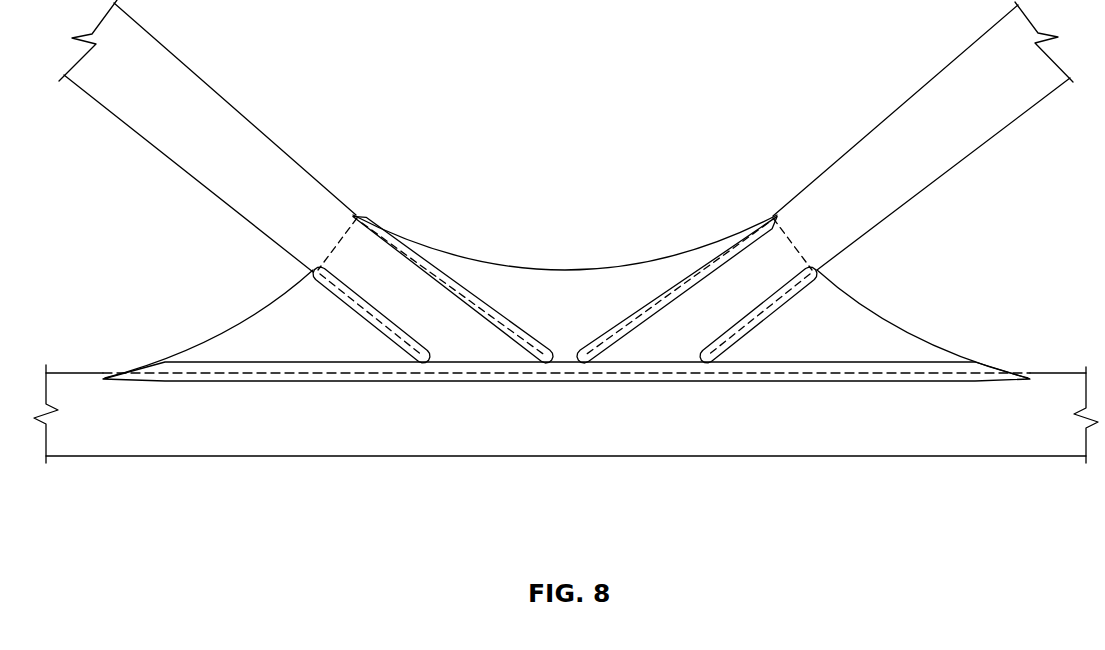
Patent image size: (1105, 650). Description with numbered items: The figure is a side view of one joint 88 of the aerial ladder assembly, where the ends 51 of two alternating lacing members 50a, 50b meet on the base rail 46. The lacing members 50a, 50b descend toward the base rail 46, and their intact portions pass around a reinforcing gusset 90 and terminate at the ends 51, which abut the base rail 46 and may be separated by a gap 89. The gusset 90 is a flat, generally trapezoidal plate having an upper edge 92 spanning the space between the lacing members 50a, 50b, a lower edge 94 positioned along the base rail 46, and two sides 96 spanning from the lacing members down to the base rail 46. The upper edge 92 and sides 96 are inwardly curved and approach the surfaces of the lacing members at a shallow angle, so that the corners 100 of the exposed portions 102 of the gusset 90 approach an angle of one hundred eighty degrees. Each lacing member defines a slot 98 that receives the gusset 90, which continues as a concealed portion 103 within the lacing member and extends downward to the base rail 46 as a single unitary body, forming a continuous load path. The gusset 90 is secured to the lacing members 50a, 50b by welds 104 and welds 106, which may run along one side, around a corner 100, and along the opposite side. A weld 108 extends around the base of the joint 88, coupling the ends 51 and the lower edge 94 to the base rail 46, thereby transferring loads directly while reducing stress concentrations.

The base rail 46 is at (210, 447).
The lacing member 50a is at (171, 62).
The lacing member 50b is at (982, 147).
The end 51 is at (386, 384).
The joint 88 is at (573, 465).
The gap 89 is at (572, 337).
The gusset 90 is at (492, 249).
The upper edge 92 is at (539, 267).
The lower edge 94 is at (309, 383).
The side 96 is at (231, 326).
The slot 98 is at (438, 258).
The corner 100 is at (373, 211).
The exposed portion 102 is at (593, 276).
The concealed portion 103 is at (367, 273).
The weld 104 is at (667, 310).
The weld 106 is at (468, 311).
The weld 108 is at (962, 360).